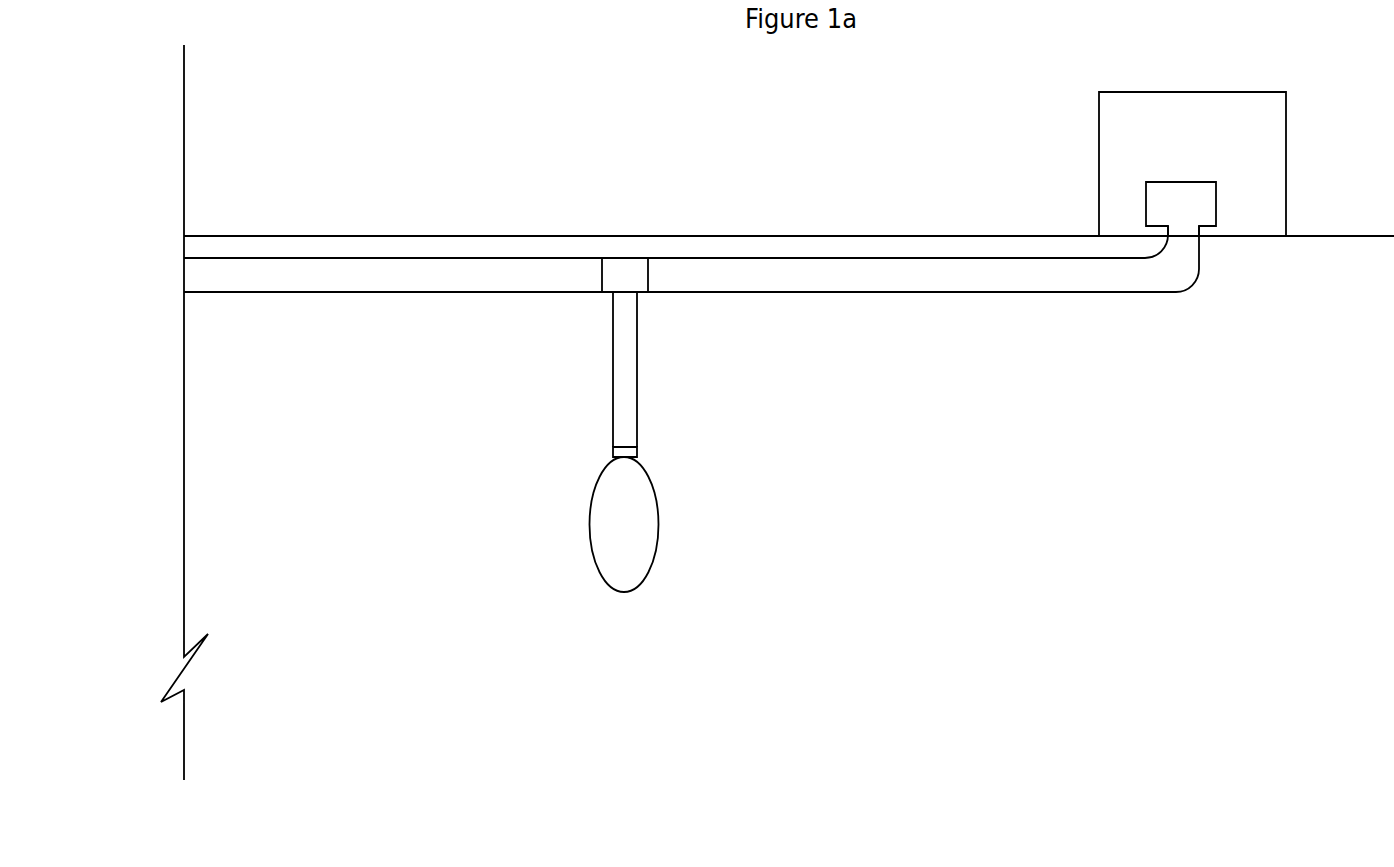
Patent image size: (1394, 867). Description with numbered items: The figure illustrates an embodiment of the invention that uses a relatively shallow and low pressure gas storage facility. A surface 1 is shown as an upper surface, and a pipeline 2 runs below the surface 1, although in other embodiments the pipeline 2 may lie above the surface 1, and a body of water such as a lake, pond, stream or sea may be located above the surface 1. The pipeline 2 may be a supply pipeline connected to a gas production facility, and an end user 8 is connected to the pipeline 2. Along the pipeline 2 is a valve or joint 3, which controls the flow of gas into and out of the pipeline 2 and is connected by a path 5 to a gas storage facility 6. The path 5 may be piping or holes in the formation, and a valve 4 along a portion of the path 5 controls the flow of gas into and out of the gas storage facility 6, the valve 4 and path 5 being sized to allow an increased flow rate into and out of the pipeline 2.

The surface 1 is at (322, 224).
The pipeline 2 is at (846, 281).
The valve or joint 3 is at (625, 269).
The valve 4 is at (625, 457).
The path 5 is at (601, 359).
The gas storage facility 6 is at (647, 523).
The end user 8 is at (1251, 115).